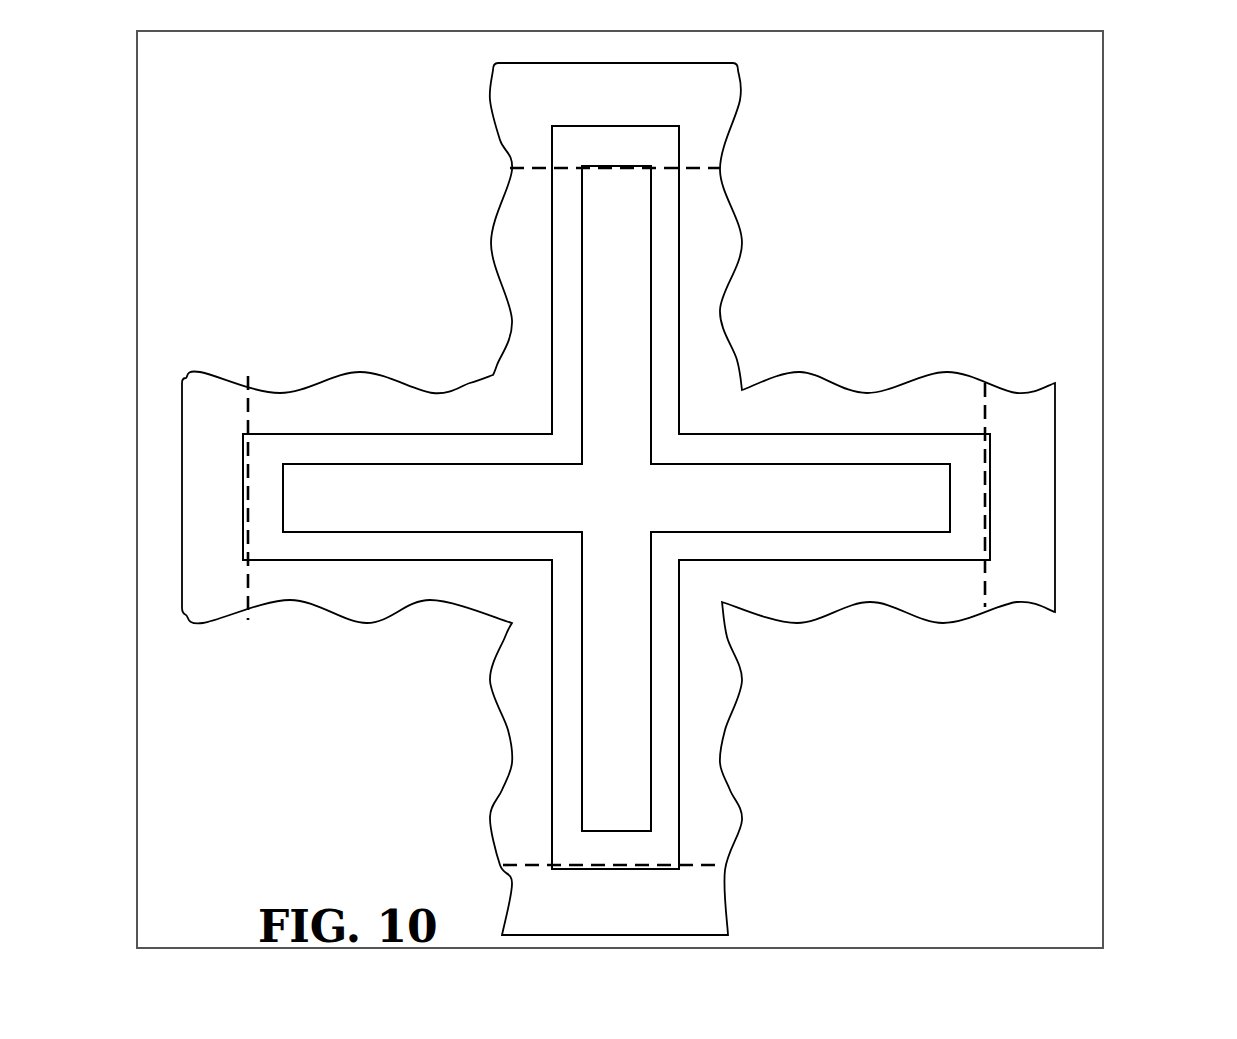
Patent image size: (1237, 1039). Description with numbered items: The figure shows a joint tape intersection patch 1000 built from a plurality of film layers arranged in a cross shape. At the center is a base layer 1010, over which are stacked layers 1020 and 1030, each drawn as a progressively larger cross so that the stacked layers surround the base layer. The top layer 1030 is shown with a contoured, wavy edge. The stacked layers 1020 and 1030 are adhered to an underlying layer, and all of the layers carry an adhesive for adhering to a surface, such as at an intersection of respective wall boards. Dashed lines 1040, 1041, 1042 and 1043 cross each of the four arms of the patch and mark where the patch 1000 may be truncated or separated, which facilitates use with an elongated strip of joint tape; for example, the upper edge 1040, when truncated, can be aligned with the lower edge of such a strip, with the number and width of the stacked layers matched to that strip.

The joint tape intersection patch 1000 is at (1132, 80).
The base layer 1010 is at (603, 167).
The stacked layer 1020 is at (640, 126).
The top stacked layer 1030 is at (738, 82).
The dashed line 1040 is at (517, 168).
The dashed line 1041 is at (503, 865).
The dashed line 1042 is at (249, 378).
The dashed line 1043 is at (985, 385).